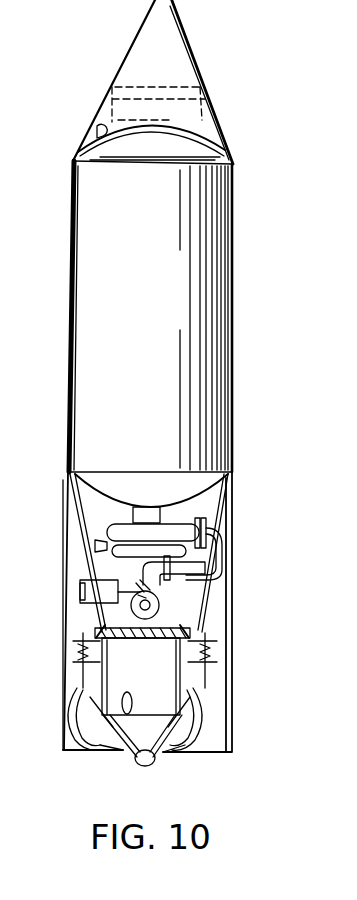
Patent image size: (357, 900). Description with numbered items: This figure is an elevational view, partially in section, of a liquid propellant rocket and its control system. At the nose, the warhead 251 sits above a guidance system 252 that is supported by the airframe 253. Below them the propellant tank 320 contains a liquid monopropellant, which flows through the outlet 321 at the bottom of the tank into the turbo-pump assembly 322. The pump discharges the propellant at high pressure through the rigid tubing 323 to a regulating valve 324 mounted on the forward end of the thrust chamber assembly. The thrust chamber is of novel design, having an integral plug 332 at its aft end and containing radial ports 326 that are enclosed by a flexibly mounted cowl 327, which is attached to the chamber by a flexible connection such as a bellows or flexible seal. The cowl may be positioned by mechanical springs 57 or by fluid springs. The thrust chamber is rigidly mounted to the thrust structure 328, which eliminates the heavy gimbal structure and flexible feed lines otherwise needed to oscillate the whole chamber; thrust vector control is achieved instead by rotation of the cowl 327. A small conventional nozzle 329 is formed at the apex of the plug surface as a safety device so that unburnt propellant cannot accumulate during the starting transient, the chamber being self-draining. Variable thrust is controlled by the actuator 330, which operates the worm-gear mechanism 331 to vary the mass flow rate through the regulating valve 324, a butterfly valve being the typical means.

The warhead 251 is at (190, 42).
The guidance system 252 is at (212, 101).
The airframe 253 is at (222, 143).
The propellant tank 320 is at (234, 256).
The outlet 321 is at (156, 510).
The turbo-pump assembly 322 is at (216, 510).
The rigid tubing 323 is at (224, 557).
The regulating valve 324 is at (160, 597).
The actuator 330 is at (82, 595).
The worm-gear mechanism 331 is at (140, 584).
The thrust structure 328 is at (96, 623).
The mechanical springs 57 is at (74, 652).
The radial ports 326 is at (178, 708).
The cowl 327 is at (182, 707).
The integral plug 332 is at (168, 750).
The nozzle 329 is at (142, 767).